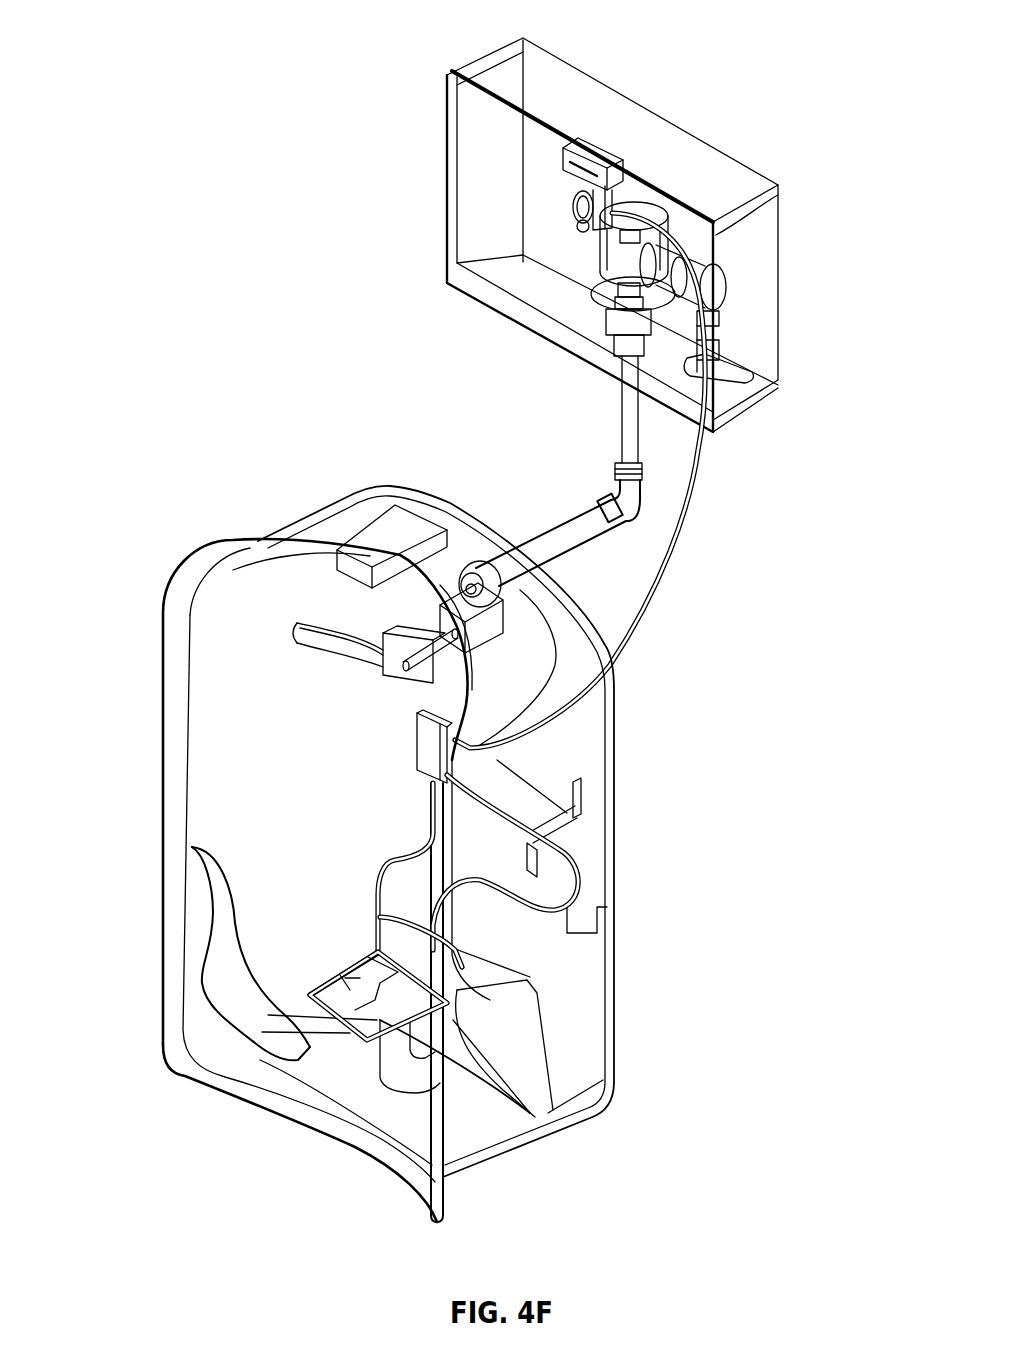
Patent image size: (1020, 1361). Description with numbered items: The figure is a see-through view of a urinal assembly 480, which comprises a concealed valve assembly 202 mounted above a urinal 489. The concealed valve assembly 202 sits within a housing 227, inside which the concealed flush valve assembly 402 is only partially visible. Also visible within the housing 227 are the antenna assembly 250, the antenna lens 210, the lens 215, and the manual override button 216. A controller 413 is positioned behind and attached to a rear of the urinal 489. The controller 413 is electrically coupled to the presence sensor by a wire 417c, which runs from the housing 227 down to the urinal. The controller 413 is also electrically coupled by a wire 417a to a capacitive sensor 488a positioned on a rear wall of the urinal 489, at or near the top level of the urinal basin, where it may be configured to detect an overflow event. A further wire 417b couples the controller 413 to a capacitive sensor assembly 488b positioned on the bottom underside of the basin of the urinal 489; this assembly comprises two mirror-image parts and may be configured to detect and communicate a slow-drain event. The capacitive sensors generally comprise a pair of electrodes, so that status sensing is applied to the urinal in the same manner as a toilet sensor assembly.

The urinal assembly 480 is at (755, 39).
The concealed valve assembly 202 is at (413, 185).
The antenna lens 210 is at (563, 165).
The lens 215 is at (573, 198).
The manual override button 216 is at (573, 227).
The antenna assembly 250 is at (600, 163).
The concealed flush valve assembly 402 is at (571, 283).
The housing 227 is at (767, 343).
The wire 417a is at (588, 876).
The wire 417b is at (378, 895).
The wire 417c is at (700, 483).
The controller 413 is at (582, 820).
The capacitive sensor 488a is at (460, 963).
The capacitive sensor assembly 488b is at (360, 1003).
The urinal 489 is at (607, 1033).